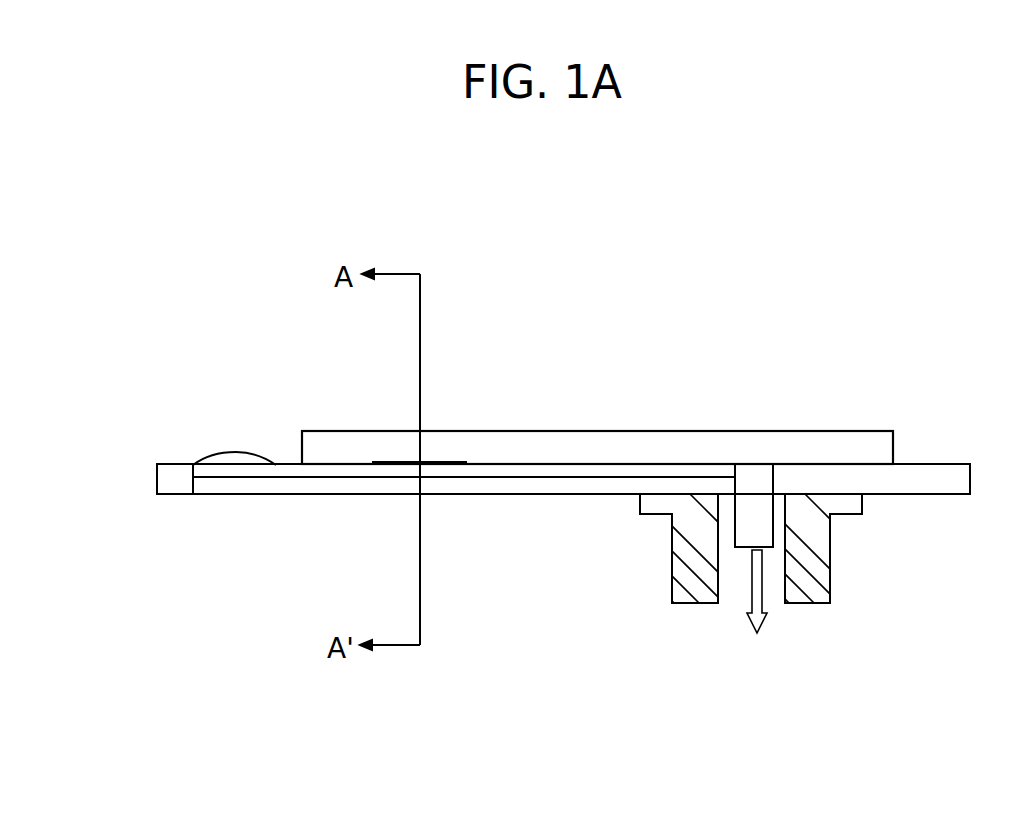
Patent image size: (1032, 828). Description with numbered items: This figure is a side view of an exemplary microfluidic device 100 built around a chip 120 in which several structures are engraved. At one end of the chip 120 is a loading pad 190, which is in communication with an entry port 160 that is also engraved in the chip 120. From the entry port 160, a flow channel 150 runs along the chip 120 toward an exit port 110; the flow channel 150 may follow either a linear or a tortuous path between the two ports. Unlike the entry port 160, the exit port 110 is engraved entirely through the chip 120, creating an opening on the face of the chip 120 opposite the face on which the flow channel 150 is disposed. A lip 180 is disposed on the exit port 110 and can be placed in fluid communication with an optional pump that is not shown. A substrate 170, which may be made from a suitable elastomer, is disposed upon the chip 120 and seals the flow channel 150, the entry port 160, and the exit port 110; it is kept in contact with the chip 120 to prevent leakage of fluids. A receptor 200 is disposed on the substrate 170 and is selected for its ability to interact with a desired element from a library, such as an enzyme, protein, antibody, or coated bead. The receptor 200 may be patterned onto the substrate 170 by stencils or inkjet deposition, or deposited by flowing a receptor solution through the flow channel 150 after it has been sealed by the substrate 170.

The microfluidic device 100 is at (858, 316).
The exit port 110 is at (752, 476).
The chip 120 is at (948, 462).
The flow channel 150 is at (613, 463).
The entry port 160 is at (273, 465).
The substrate 170 is at (533, 447).
The lip 180 is at (815, 550).
The loading pad 190 is at (210, 467).
The receptor 200 is at (448, 463).